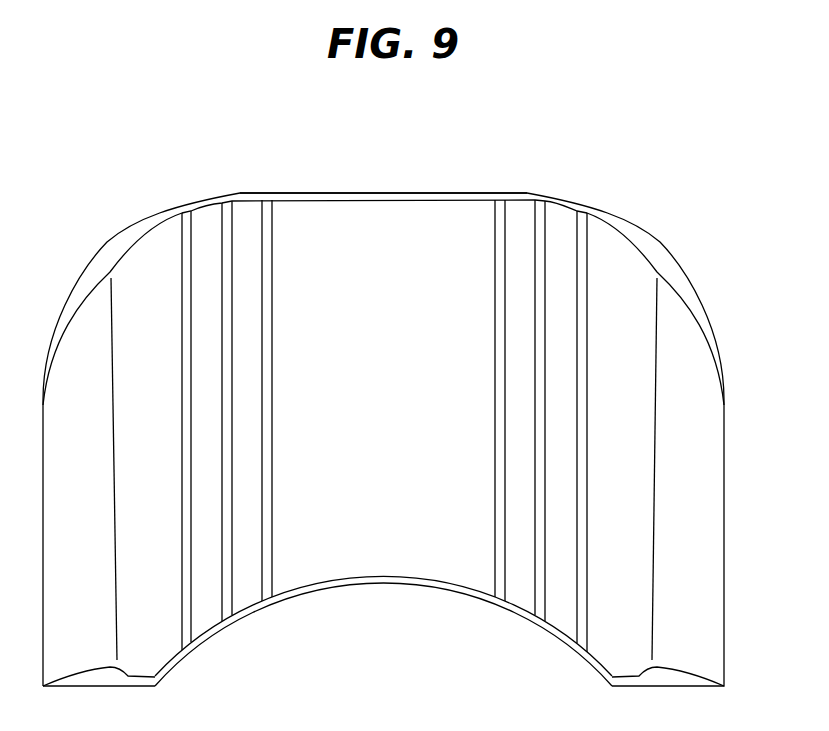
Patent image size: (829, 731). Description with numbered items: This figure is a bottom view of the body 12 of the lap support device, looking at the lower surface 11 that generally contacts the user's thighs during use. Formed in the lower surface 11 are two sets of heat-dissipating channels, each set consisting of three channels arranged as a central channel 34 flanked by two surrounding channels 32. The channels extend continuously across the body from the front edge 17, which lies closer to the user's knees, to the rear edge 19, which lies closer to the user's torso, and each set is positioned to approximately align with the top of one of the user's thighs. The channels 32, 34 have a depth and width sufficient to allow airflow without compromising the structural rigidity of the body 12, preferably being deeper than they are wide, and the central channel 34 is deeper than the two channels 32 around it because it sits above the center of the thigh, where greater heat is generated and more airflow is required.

The lower surface 11 is at (396, 373).
The body 12 is at (673, 172).
The front edge 17 is at (382, 193).
The rear edge 19 is at (380, 590).
The heat-dissipating channels 32 is at (178, 227).
The central channel 34 is at (225, 220).